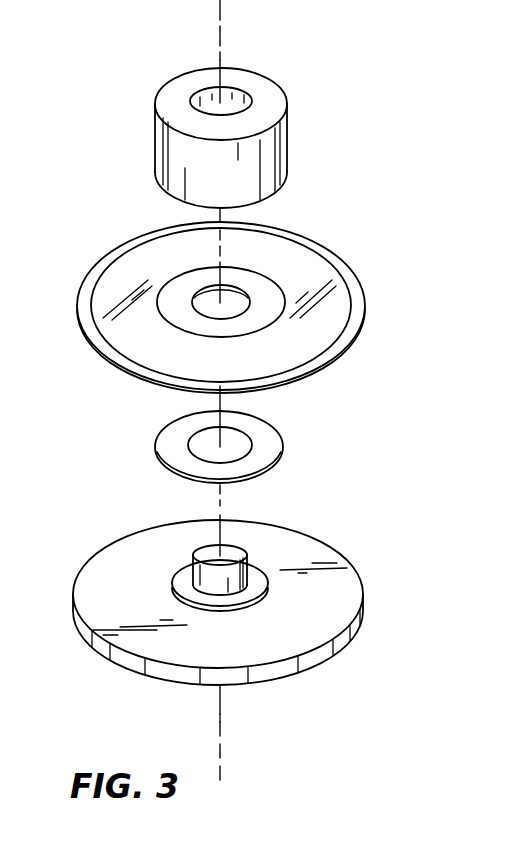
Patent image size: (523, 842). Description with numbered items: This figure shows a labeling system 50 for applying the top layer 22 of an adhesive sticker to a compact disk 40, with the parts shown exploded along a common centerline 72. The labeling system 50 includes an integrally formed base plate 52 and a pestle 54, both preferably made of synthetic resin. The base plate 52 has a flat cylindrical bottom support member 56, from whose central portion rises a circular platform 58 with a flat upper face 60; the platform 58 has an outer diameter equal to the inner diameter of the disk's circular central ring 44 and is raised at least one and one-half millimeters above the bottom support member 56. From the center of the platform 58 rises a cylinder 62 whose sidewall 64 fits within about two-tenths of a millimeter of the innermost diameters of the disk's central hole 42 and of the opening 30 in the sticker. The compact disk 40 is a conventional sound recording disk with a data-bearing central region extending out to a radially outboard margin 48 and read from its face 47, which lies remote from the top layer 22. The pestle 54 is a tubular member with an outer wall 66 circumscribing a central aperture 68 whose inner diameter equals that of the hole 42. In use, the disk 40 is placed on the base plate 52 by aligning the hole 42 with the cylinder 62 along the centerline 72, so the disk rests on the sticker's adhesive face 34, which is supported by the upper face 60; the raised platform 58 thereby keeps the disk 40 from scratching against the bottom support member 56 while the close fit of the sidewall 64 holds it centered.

The labeling system 50 is at (100, 80).
The pestle 54 is at (255, 116).
The outer wall 66 is at (287, 157).
The central aperture 68 is at (209, 95).
The compact disk 40 is at (224, 300).
The radially outboard margin 48 is at (98, 272).
The central hole 42 is at (242, 288).
The circular central ring 44 is at (255, 325).
The face 47 is at (244, 356).
The top layer 22 is at (248, 443).
The opening 30 is at (247, 443).
The adhesive face 34 is at (175, 453).
The base plate 52 is at (244, 594).
The bottom support member 56 is at (315, 624).
The circular platform 58 is at (215, 578).
The cylinder 62 is at (205, 547).
The sidewall 64 is at (197, 578).
The upper face 60 is at (203, 598).
The centerline 72 is at (220, 712).